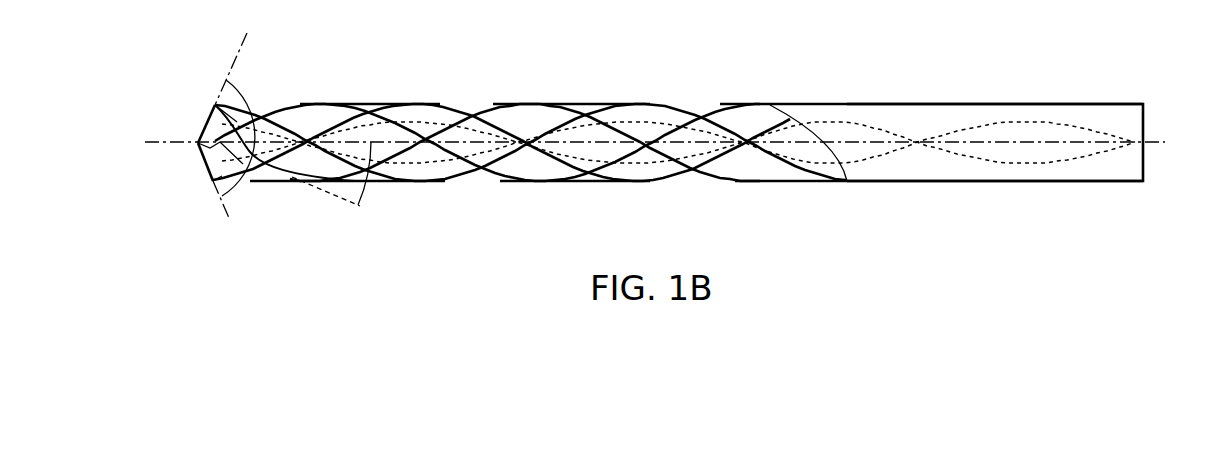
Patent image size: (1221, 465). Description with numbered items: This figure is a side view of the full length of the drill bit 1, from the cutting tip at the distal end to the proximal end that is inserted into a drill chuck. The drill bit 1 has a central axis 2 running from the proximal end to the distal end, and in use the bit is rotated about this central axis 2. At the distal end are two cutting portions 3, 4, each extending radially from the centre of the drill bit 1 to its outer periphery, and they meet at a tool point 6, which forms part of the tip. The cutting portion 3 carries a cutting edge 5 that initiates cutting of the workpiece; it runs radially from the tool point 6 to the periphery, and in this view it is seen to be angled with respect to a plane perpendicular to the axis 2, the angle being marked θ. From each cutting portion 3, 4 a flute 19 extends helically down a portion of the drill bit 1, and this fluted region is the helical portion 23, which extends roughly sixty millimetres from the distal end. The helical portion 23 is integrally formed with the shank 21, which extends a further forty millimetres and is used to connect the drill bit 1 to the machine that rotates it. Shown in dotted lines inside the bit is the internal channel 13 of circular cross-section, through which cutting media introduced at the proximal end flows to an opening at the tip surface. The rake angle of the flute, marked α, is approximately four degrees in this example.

The drill bit 1 is at (167, 40).
The central axis 2 is at (1153, 142).
The cutting portion 3 is at (191, 134).
The cutting portion 4 is at (217, 117).
The cutting edge 5 is at (215, 105).
The tool point 6 is at (198, 143).
The channel 13 is at (637, 164).
The flute 19 is at (518, 112).
The shank 21 is at (838, 203).
The helical portion 23 is at (678, 175).